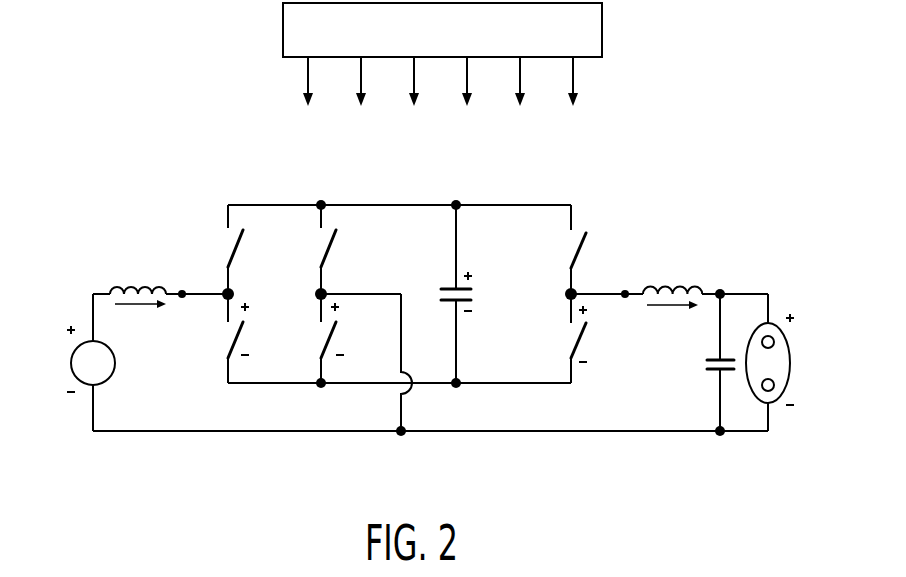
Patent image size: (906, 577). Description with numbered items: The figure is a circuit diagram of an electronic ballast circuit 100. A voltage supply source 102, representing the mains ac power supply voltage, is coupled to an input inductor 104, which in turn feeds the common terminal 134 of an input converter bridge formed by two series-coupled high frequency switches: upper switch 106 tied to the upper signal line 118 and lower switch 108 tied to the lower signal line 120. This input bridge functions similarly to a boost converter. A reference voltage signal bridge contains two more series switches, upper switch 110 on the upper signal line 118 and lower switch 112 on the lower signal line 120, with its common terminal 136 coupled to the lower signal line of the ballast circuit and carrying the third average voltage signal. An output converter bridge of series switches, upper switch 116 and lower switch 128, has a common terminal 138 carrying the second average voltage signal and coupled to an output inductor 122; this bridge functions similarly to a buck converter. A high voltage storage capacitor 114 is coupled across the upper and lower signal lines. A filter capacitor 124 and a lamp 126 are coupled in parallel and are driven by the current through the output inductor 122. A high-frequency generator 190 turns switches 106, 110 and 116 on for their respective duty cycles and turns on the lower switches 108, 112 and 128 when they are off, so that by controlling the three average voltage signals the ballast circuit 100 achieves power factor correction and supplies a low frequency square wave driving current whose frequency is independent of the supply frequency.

The electronic ballast circuit 100 is at (430, 331).
The voltage supply source 102 is at (108, 378).
The input inductor 104 is at (111, 293).
The upper switch of input converter bridge 106 is at (229, 245).
The lower switch of input converter bridge 108 is at (237, 340).
The upper switch of reference voltage signal bridge 110 is at (338, 248).
The lower switch of reference voltage signal bridge 112 is at (333, 345).
The high voltage storage capacitor 114 is at (457, 248).
The upper switch of output converter bridge 116 is at (590, 233).
The upper signal line 118 is at (490, 204).
The lower signal line 120 is at (556, 405).
The output inductor 122 is at (697, 290).
The filter capacitor 124 is at (728, 357).
The lamp 126 is at (790, 372).
The lower switch of output converter bridge 128 is at (582, 345).
The common terminal of input converter bridge 134 is at (222, 296).
The common terminal of reference voltage signal bridge 136 is at (316, 293).
The common terminal of output converter bridge 138 is at (573, 283).
The high-frequency generator 190 is at (283, 30).